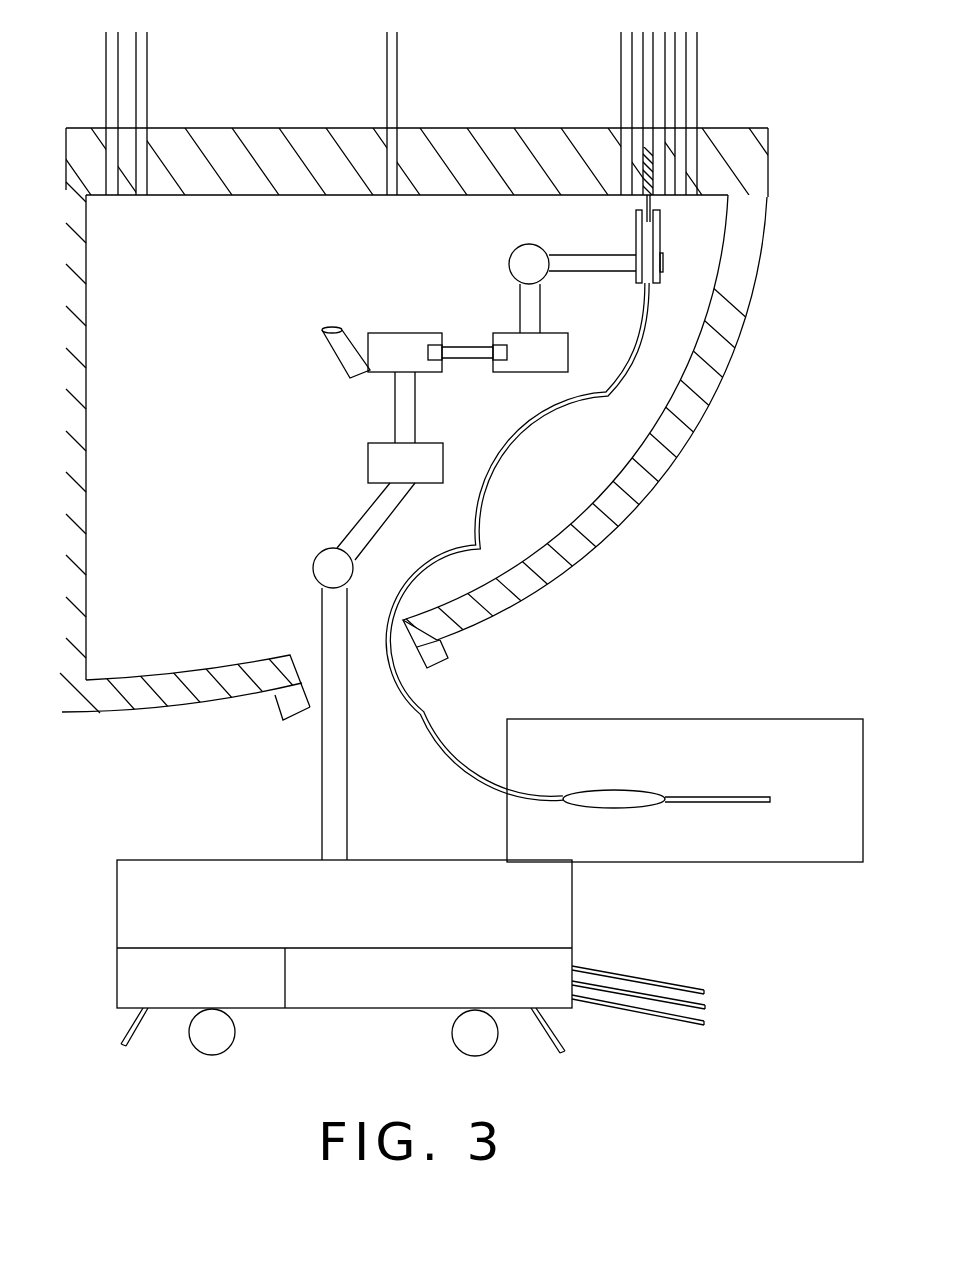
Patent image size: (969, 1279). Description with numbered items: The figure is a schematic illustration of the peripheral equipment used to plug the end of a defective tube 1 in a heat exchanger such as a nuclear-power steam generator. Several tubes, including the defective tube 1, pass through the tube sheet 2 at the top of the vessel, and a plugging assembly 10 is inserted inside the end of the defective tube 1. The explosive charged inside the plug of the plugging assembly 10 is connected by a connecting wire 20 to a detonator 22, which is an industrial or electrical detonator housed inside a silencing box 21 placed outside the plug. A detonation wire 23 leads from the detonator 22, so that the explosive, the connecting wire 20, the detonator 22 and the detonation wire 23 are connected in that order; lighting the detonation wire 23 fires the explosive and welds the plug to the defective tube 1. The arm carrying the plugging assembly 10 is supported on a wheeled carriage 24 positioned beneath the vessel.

The defective tube 1 is at (397, 98).
The tube sheet 2 is at (346, 135).
The plugging assembly 10 is at (667, 190).
The connecting wire 20 is at (533, 435).
The silencing box 21 is at (720, 719).
The detonator 22 is at (627, 792).
The detonation wire 23 is at (728, 805).
The carriage 24 is at (130, 917).